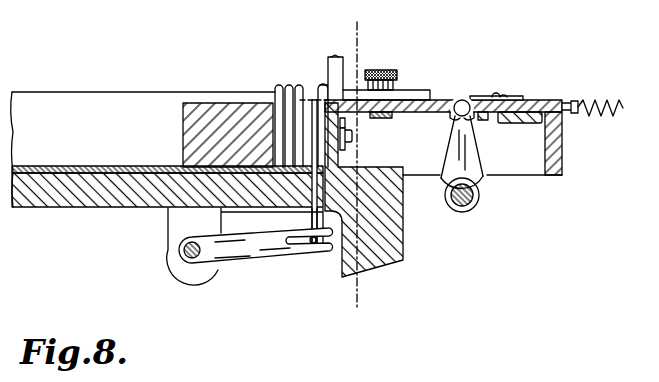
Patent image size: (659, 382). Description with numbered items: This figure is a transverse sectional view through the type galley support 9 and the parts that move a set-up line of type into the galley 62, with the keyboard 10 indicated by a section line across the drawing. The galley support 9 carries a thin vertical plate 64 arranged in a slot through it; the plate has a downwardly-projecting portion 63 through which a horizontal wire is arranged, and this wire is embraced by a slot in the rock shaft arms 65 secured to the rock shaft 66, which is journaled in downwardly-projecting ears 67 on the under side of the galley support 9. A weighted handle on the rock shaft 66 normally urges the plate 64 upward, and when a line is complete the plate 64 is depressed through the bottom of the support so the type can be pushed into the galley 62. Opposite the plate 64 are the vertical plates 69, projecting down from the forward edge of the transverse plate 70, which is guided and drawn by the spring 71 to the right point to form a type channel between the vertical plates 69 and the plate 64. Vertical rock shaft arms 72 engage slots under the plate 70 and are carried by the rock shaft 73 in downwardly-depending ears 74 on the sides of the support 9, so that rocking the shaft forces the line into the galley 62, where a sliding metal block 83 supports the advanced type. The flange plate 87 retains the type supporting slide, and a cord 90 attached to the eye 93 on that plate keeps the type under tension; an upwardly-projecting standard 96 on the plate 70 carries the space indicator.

The type galley support 9 is at (97, 203).
The keyboard 10 is at (364, 25).
The galley 62 is at (104, 166).
The downwardly-projecting portion 63 is at (322, 214).
The vertical plate 64 is at (311, 190).
The rock shaft arms 65 is at (246, 258).
The rock shaft 66 is at (181, 252).
The downwardly-projecting ears 67 is at (180, 218).
The vertical plates 69 is at (334, 112).
The transverse plate 70 is at (440, 98).
The spring 71 is at (597, 103).
The vertical rock shaft arms 72 is at (473, 178).
The rock shaft 73 is at (472, 222).
The downwardly-depending ears 74 is at (445, 219).
The metal block 83 is at (222, 116).
The flange plate 87 is at (345, 123).
The cord 90 is at (345, 143).
The eye 93 is at (353, 137).
The upwardly-projecting standard 96 is at (337, 58).